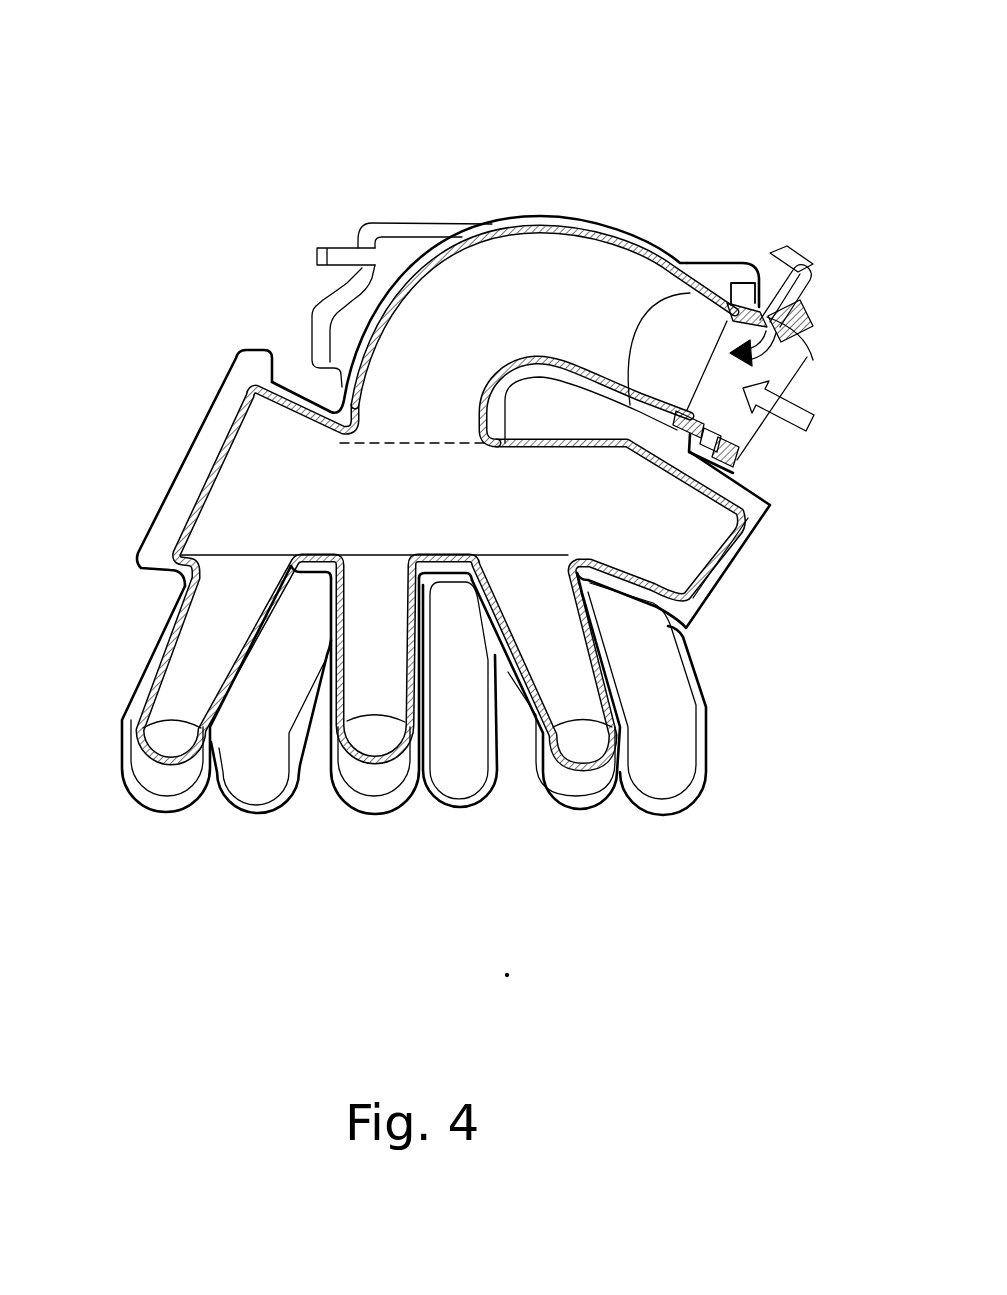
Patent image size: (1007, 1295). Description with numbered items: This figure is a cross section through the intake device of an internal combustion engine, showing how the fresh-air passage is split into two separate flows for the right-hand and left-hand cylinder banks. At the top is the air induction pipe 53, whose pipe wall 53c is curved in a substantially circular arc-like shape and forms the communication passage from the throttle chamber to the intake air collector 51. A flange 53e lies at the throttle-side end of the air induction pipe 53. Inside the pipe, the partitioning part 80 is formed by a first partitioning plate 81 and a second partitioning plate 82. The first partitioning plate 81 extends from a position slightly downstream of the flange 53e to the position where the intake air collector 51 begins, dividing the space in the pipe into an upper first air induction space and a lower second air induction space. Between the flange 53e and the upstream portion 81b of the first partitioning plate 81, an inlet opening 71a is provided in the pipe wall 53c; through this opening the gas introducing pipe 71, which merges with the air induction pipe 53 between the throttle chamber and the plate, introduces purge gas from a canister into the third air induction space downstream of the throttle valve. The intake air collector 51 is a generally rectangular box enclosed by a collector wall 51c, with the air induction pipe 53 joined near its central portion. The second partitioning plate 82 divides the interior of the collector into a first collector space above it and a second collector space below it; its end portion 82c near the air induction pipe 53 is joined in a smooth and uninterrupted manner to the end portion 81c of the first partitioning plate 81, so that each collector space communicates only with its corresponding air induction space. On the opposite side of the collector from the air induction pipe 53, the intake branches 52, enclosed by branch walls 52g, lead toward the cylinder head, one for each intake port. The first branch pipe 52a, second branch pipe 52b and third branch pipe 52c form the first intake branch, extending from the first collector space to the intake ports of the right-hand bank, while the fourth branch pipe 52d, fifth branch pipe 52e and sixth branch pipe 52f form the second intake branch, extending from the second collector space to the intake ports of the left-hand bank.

The partitioning part 80 is at (545, 128).
The first partitioning plate 81 is at (546, 255).
The upstream portion 81b is at (633, 317).
The end portion 81c is at (467, 430).
The second partitioning plate 82 is at (247, 443).
The end portion 82c is at (387, 457).
The air induction pipe 53 is at (665, 165).
The pipe wall 53c is at (647, 243).
The flange 53e is at (803, 310).
The gas introducing pipe 71 is at (775, 248).
The inlet opening 71a is at (773, 350).
The intake air collector 51 is at (100, 507).
The collector wall 51c is at (173, 530).
The intake branches 52 is at (238, 905).
The first branch pipe 52a is at (160, 777).
The second branch pipe 52b is at (373, 777).
The third branch pipe 52c is at (583, 777).
The fourth branch pipe 52d is at (250, 777).
The fifth branch pipe 52e is at (460, 767).
The sixth branch pipe 52f is at (667, 780).
The accommodating portion lining wall 52g is at (147, 700).